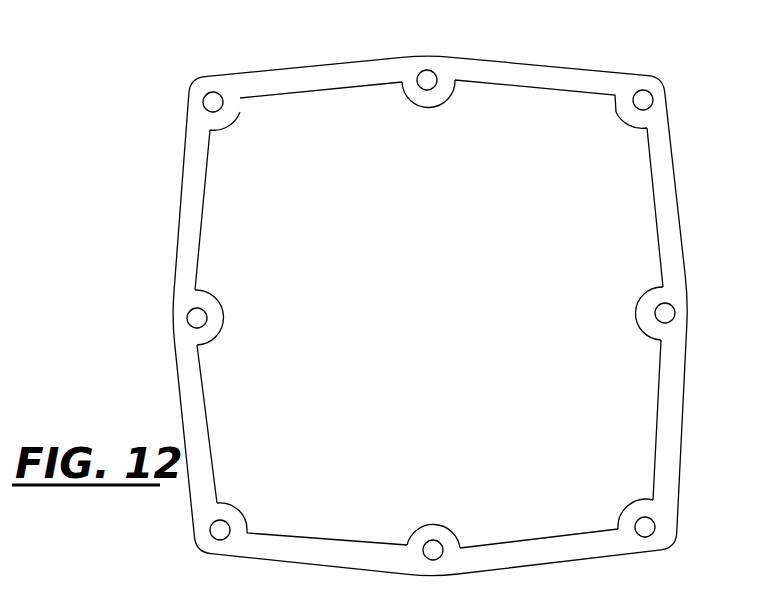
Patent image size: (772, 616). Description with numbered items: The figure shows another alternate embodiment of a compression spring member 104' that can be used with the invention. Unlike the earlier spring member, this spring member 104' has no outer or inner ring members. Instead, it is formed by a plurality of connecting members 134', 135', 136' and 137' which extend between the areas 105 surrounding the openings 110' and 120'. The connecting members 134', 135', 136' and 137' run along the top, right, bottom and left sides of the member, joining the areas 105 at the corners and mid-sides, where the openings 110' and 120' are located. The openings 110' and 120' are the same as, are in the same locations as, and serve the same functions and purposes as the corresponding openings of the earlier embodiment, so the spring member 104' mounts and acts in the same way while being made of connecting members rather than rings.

The spring member 104' is at (342, 314).
The areas of the openings 105 is at (222, 125).
The openings 110' is at (434, 324).
The openings 120' is at (426, 314).
The connecting member 134' is at (704, 321).
The connecting member 135' is at (427, 60).
The connecting member 136' is at (140, 315).
The connecting member 137' is at (428, 530).